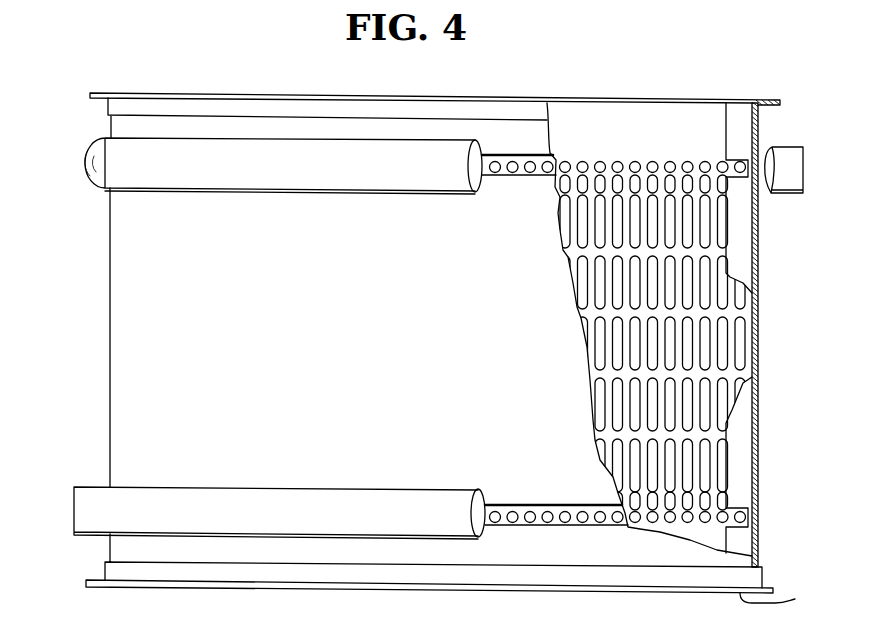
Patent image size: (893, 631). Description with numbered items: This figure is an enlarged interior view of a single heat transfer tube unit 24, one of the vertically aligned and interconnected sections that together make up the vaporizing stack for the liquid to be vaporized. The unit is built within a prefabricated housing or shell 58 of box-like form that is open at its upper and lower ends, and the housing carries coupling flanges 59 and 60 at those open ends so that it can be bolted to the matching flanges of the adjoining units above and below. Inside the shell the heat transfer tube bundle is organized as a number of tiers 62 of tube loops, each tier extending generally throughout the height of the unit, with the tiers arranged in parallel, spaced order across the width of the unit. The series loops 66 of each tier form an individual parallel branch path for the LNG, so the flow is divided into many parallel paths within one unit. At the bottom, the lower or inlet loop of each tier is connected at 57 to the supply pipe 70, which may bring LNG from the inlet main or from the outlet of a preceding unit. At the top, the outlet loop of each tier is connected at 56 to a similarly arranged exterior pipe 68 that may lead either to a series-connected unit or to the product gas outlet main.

The heat transfer tube unit 24 is at (429, 333).
The outlet loop connection 56 is at (538, 159).
The inlet loop connection 57 is at (580, 508).
The housing or shell 58 is at (757, 421).
The upper coupling flange 59 is at (469, 82).
The lower coupling flange 60 is at (458, 598).
The tiers of tube loops 62 is at (683, 323).
The series loops 66 is at (725, 397).
The exterior pipe 68 is at (797, 146).
The supply pipe 70 is at (88, 487).